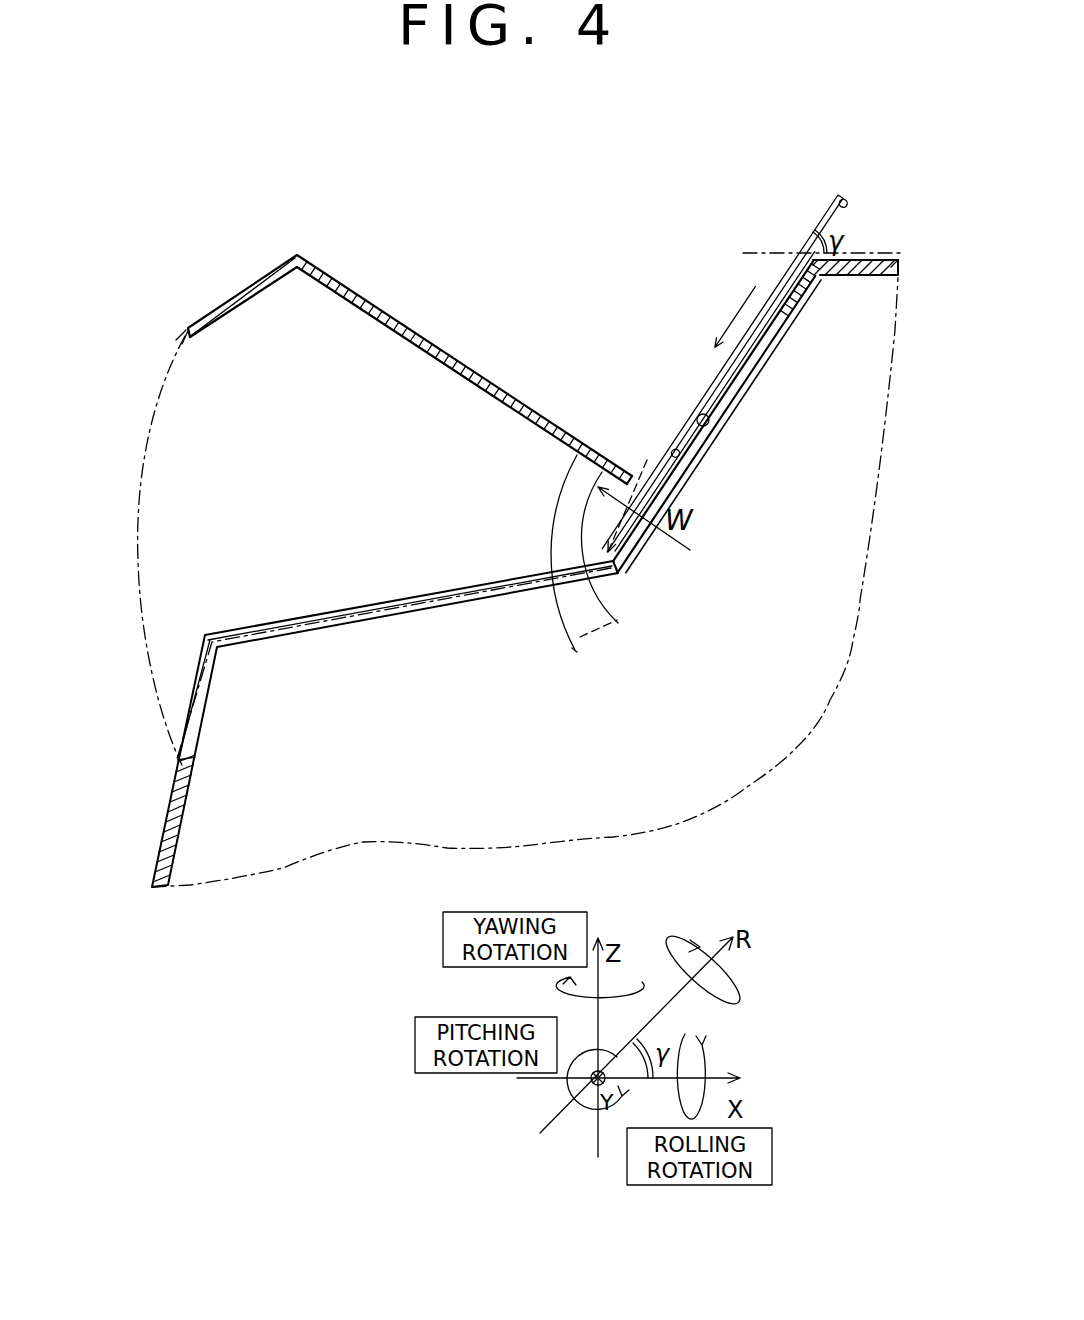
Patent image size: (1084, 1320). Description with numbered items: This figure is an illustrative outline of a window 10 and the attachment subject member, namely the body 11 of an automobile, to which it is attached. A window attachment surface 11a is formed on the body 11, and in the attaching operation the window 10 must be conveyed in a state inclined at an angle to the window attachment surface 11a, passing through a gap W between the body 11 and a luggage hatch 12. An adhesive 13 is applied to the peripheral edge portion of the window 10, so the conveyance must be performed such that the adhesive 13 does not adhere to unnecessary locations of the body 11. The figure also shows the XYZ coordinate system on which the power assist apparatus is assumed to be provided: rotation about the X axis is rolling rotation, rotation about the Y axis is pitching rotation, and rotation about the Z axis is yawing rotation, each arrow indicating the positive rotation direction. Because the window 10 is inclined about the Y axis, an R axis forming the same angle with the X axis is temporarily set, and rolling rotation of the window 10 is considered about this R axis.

The window 10 is at (840, 192).
The body 11 is at (895, 262).
The window attachment surface 11a is at (706, 426).
The luggage hatch 12 is at (297, 254).
The adhesive 13 is at (846, 200).